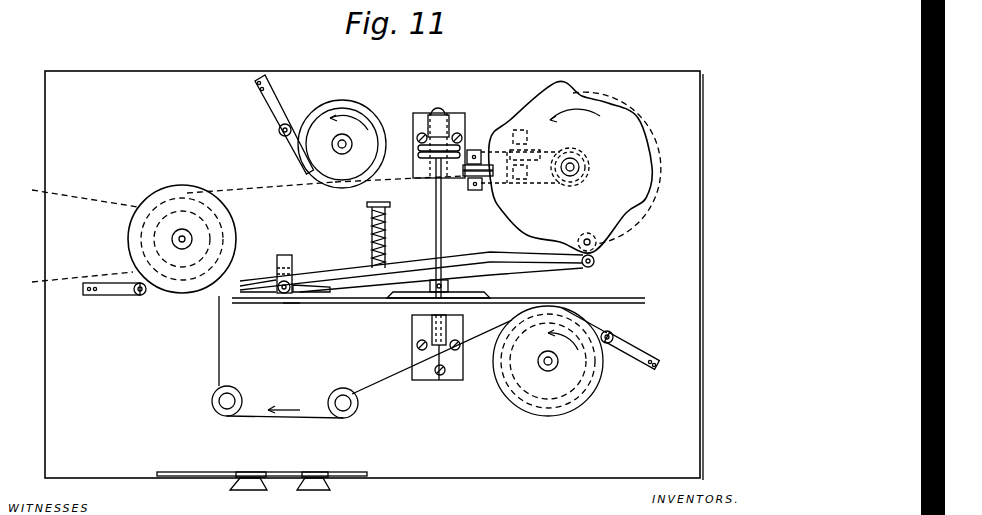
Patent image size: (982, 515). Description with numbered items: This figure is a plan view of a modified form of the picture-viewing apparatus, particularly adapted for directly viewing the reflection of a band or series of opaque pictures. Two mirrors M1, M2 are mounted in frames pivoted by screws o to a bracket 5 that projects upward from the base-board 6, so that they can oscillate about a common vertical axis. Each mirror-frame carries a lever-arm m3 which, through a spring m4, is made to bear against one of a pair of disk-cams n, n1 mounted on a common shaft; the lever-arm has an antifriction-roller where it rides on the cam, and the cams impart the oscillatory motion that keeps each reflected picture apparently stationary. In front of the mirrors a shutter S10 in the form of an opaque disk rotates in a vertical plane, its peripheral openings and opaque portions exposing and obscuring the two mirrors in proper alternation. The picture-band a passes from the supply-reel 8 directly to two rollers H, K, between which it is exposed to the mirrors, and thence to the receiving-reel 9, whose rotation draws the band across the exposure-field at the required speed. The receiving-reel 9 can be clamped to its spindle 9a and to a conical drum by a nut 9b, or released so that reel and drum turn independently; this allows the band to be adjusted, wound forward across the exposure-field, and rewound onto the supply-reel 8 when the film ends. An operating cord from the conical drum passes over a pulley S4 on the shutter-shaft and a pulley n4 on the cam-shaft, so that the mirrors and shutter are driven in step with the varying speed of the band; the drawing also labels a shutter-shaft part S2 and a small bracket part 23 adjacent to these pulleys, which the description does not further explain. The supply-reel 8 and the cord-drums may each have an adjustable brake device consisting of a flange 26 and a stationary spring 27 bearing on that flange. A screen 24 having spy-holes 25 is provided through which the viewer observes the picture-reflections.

The base-board 6 is at (374, 275).
The flange 26 is at (177, 180).
The receiving-reel 9 is at (134, 240).
The spindle 9a is at (189, 238).
The nut 9b is at (182, 250).
The mirror M1 is at (254, 265).
The bracket 5 is at (288, 256).
The mirror M2 is at (329, 283).
The spring m4 is at (388, 222).
The vertical rod S2 is at (443, 218).
The pulley S4 is at (416, 156).
The bracket 23 is at (476, 148).
The pulley n4 is at (578, 166).
The disk-cam n1 is at (647, 186).
The disk-cam n is at (612, 236).
The lever-arm m3 is at (530, 257).
The shutter S10 is at (454, 296).
The screws o is at (291, 313).
The picture-band a is at (221, 320).
The stationary spring 27 is at (598, 335).
The supply-reel 8 is at (552, 371).
The roller K is at (212, 404).
The roller H is at (356, 408).
The screen 24 is at (166, 470).
The spy-holes 25 is at (305, 488).